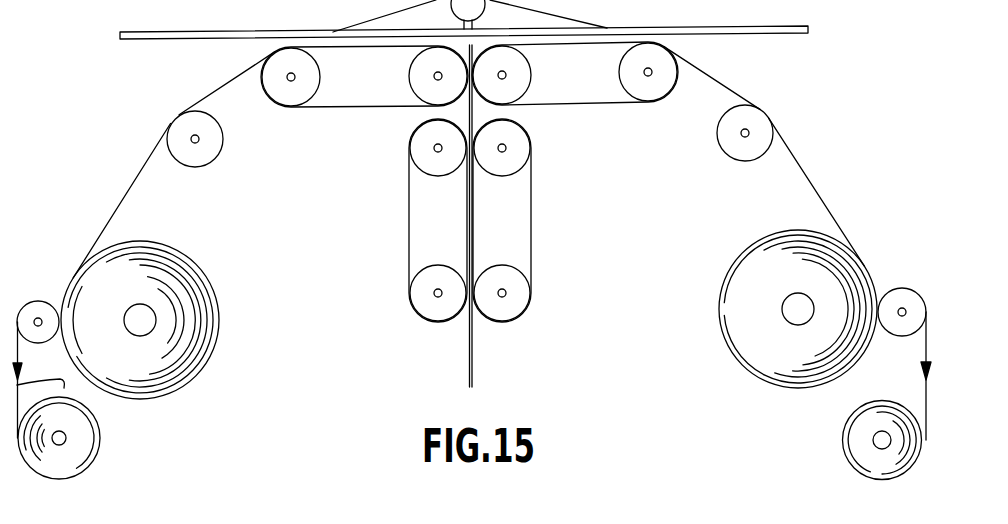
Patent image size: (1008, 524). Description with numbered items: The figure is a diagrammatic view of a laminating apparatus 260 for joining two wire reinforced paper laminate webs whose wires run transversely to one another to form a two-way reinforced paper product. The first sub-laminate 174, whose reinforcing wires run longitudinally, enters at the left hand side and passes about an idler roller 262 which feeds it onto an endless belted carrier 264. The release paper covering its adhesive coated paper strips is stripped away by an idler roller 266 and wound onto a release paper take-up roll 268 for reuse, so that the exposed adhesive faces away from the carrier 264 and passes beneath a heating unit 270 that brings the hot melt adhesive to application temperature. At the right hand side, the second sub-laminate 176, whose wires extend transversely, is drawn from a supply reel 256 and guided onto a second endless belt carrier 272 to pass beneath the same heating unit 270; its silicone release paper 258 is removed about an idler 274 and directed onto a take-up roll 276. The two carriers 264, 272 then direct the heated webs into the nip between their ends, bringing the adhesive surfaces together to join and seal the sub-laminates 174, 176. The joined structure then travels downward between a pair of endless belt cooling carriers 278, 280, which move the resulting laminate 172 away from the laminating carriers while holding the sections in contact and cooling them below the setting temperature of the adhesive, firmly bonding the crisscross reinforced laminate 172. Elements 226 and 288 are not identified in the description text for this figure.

The resulting laminate 172 is at (474, 366).
The first sub-laminate 174 is at (146, 174).
The second sub-laminate 176 is at (810, 164).
The supply roll 226 is at (186, 272).
The supply reel 256 is at (720, 297).
The release paper 258 is at (926, 356).
The laminating apparatus 260 is at (387, 246).
The idler roller 262 is at (170, 128).
The endless belted carrier 264 is at (360, 108).
The idler roller 266 is at (42, 300).
The release paper take-up roll 268 is at (100, 450).
The heating unit 270 is at (197, 40).
The second endless belt carrier 272 is at (586, 106).
The idler 274 is at (902, 290).
The take-up roll 276 is at (843, 440).
The endless belt cooling carrier 278 is at (409, 209).
The endless belt cooling carrier 280 is at (532, 209).
The stripper blade 288 is at (64, 389).